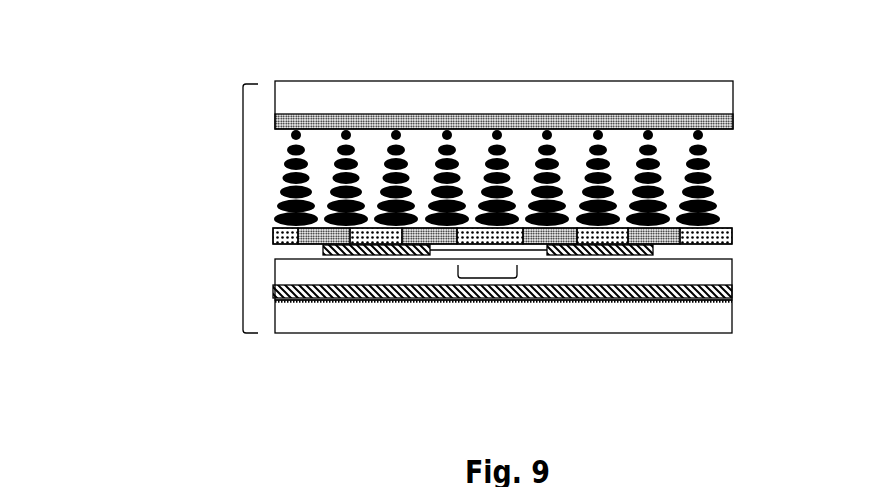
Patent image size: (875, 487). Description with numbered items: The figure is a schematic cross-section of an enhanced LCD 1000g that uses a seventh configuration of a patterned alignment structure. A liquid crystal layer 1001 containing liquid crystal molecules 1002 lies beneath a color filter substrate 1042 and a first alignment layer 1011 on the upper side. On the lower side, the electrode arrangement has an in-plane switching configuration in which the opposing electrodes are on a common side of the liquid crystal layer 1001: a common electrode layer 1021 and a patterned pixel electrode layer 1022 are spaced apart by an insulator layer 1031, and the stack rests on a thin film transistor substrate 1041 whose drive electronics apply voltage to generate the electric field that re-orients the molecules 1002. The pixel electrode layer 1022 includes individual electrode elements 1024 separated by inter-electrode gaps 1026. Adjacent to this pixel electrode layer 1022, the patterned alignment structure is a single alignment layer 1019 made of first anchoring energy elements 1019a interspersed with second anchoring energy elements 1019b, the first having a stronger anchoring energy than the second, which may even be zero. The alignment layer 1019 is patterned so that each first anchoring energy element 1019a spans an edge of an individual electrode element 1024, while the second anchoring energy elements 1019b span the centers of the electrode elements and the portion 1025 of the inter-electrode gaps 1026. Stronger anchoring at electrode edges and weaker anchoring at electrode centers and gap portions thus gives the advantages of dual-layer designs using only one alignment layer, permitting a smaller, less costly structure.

The enhanced LCD 1000g is at (243, 210).
The liquid crystal molecules 1002 is at (655, 165).
The color filter substrate 1042 is at (733, 81).
The first alignment layer 1011 is at (733, 114).
The liquid crystal layer 1001 is at (733, 130).
The single alignment layer 1019 is at (733, 228).
The first anchoring energy elements 1019a is at (313, 243).
The second anchoring energy elements 1019b is at (612, 243).
The pixel electrode layer 1022 is at (733, 245).
The individual electrode elements 1024 is at (378, 255).
The inter-electrode gaps 1026 is at (453, 250).
The portion of the inter-electrode gaps 1025 is at (490, 278).
The insulator layer 1031 is at (733, 259).
The common electrode layer 1021 is at (733, 285).
The thin film transistor substrate 1041 is at (733, 300).